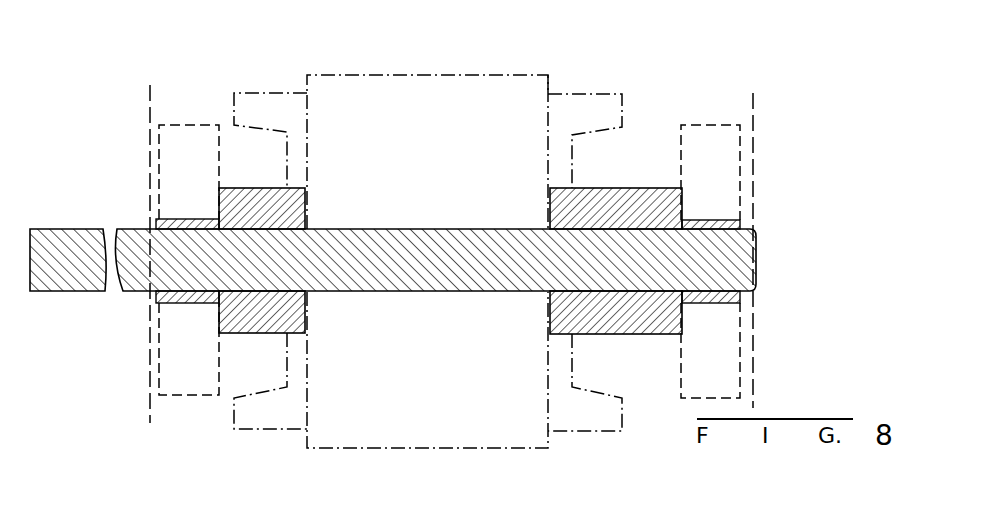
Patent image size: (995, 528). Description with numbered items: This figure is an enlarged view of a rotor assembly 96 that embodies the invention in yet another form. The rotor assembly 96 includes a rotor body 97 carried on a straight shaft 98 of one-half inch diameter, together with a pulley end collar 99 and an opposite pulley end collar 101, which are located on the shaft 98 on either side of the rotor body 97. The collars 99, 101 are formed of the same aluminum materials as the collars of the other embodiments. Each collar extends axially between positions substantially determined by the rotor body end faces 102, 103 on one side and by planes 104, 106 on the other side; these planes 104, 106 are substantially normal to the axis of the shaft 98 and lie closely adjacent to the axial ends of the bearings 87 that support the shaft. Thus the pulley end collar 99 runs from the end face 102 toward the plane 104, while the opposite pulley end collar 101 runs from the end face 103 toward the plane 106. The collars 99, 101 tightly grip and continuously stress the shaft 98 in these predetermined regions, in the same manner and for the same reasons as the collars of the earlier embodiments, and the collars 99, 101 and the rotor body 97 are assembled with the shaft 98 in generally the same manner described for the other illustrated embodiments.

The bearings 87 is at (193, 124).
The rotor assembly 96 is at (554, 80).
The rotor body 97 is at (405, 75).
The straight shaft 98 is at (745, 245).
The pulley end collar 99 is at (238, 334).
The opposite pulley end collar 101 is at (634, 327).
The rotor body end face 102 is at (307, 110).
The rotor body end face 103 is at (548, 108).
The plane 104 is at (150, 113).
The plane 106 is at (753, 122).